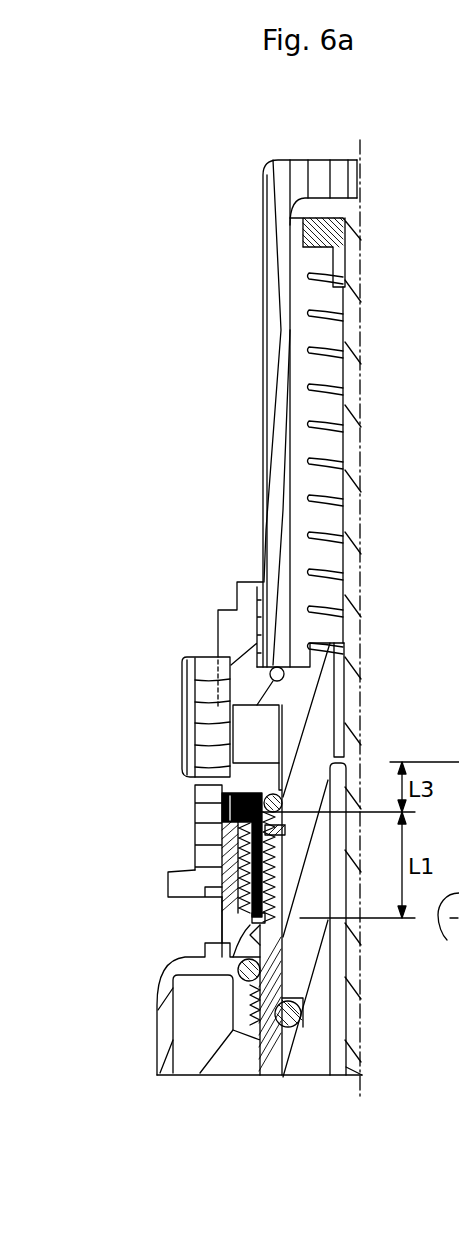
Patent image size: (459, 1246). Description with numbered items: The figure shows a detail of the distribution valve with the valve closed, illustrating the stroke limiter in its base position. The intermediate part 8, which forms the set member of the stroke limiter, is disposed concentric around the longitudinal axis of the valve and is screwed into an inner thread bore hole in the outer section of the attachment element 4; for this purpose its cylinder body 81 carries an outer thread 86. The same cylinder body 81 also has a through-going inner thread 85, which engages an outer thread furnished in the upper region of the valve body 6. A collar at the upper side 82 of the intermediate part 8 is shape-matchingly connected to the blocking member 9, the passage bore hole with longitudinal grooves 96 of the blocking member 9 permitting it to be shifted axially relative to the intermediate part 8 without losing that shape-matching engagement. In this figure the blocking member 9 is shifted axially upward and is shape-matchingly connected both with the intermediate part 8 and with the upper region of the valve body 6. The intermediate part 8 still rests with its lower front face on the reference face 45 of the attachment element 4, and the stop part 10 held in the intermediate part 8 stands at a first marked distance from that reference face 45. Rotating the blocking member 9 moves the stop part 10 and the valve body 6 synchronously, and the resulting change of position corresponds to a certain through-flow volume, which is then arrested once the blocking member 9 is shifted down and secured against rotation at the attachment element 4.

The valve body 6 is at (216, 636).
The blocking member 9 is at (182, 718).
The passage bore hole with longitudinal grooves 96 is at (250, 738).
The stop part 10 is at (220, 778).
The upper side of the intermediate part 82 is at (222, 790).
The outer thread 86 is at (233, 905).
The attachment element 4 is at (230, 918).
The inner thread 85 is at (262, 968).
The cylinder body 81 is at (300, 910).
The intermediate part 8 is at (394, 859).
The reference face 45 is at (445, 935).